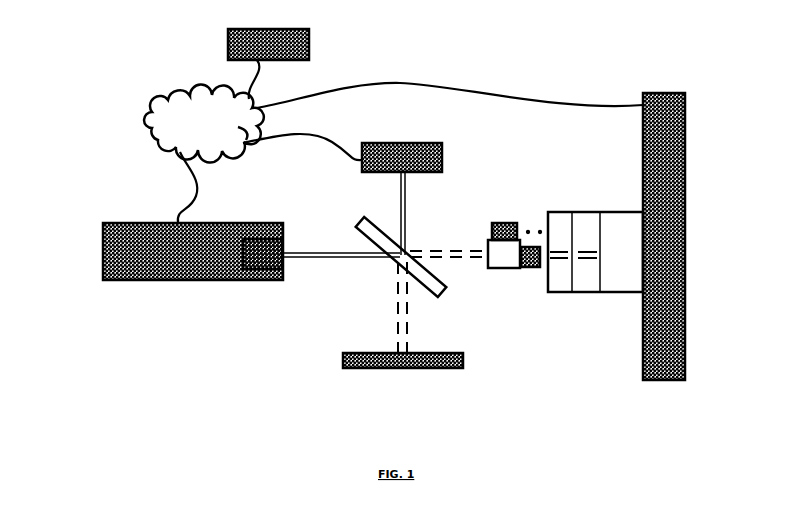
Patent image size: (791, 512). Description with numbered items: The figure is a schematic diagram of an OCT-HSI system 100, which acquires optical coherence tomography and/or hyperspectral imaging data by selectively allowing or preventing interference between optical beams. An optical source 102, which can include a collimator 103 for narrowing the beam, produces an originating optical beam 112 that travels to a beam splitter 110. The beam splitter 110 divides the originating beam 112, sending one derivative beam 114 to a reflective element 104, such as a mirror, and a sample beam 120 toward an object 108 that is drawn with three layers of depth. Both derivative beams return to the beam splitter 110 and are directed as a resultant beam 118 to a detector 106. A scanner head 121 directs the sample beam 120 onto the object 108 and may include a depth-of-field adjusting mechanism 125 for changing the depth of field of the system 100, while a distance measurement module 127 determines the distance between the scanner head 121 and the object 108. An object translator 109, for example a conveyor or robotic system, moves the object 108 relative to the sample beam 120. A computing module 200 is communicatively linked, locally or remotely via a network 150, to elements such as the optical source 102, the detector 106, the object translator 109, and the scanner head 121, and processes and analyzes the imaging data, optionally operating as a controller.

The OCT-HSI system 100 is at (90, 48).
The computing module 200 is at (309, 45).
The network 150 is at (150, 122).
The optical source 102 is at (78, 218).
The collimator 103 is at (243, 253).
The detector 106 is at (442, 157).
The object translator 109 is at (643, 160).
The object 108 is at (540, 218).
The beam splitter 110 is at (337, 213).
The originating optical beam 112 is at (330, 240).
The derivative beam 114 is at (373, 302).
The resultant beam 118 is at (375, 195).
The sample beam 120 is at (462, 250).
The scanner head 121 is at (478, 240).
The distance measurement module 127 is at (490, 222).
The depth-of-field adjusting mechanism 125 is at (537, 268).
The reflective element 104 is at (315, 343).